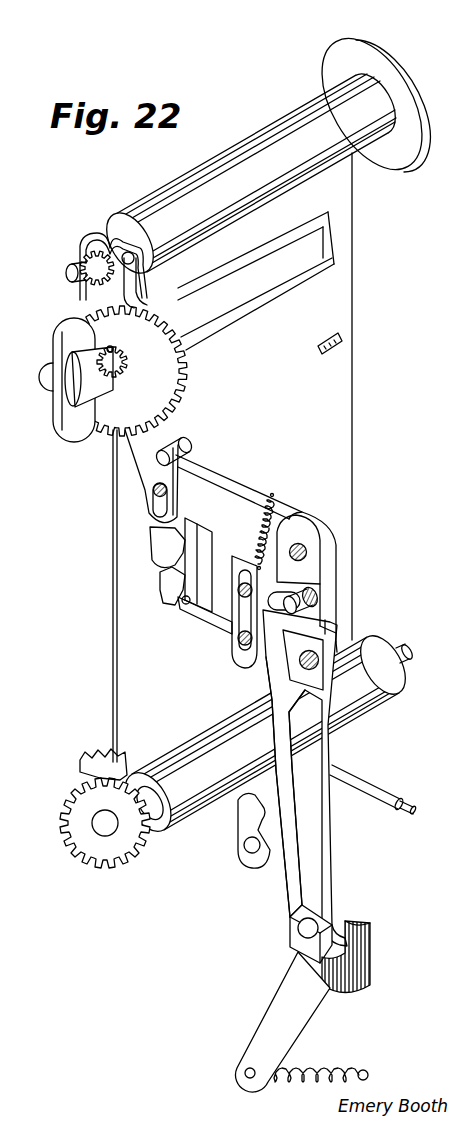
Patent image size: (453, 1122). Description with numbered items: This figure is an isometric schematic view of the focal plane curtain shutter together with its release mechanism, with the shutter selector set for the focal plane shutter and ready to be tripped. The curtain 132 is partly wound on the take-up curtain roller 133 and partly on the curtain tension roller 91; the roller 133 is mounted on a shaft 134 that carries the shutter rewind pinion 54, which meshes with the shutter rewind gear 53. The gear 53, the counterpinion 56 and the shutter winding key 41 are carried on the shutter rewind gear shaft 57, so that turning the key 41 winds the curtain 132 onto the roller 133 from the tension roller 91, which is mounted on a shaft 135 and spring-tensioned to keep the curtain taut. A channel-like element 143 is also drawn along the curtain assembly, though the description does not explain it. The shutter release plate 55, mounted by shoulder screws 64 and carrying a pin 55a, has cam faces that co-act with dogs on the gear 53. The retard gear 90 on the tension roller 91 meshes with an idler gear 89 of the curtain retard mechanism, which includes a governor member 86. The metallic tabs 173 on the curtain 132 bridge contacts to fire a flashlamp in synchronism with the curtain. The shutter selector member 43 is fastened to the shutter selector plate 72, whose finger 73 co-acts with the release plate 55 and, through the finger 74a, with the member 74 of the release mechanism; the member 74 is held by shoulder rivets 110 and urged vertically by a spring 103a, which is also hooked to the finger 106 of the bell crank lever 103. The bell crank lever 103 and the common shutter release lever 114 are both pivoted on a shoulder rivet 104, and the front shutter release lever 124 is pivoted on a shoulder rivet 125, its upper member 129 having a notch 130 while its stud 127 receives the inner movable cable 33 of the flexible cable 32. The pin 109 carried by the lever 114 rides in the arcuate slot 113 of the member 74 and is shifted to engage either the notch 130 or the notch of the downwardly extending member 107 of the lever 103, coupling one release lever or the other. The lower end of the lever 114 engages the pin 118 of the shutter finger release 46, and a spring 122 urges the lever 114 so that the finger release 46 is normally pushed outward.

The flexible cable 32 is at (357, 778).
The inner movable cable 33 is at (417, 799).
The shutter winding key 41 is at (95, 394).
The shutter selector member 43 is at (165, 583).
The shutter finger release 46 is at (371, 958).
The shutter rewind gear 53 is at (168, 370).
The shutter rewind pinion 54 is at (88, 246).
The shutter release plate 55 is at (140, 447).
The pin 55a is at (190, 448).
The counterpinion 56 is at (128, 378).
The shutter rewind gear shaft 57 is at (110, 346).
The shoulder screws 64 is at (140, 247).
The shutter selector plate 72 is at (212, 550).
The finger 73 is at (165, 545).
The member of the shutter release mechanism 74 is at (233, 640).
The finger 74a is at (197, 618).
The governor member 86 is at (441, 734).
The idler gear 89 is at (90, 752).
The retard gear 90 is at (118, 870).
The curtain tension roller 91 is at (197, 778).
The bell crank lever 103 is at (333, 529).
The spring 103a is at (292, 511).
The shoulder rivet 104 is at (308, 556).
The finger 106 is at (251, 491).
The downwardly extending member 107 is at (334, 580).
The pin 109 is at (318, 600).
The shoulder rivets 110 is at (185, 603).
The arcuate transversely extending slot 113 is at (283, 592).
The common shutter release lever 114 is at (333, 870).
The pin 118 is at (302, 932).
The spring 122 is at (332, 1062).
The front shutter release lever 124 is at (275, 752).
The shoulder rivet 125 is at (319, 667).
The stud 127 is at (248, 862).
The member 129 is at (338, 648).
The notch 130 is at (327, 634).
The curtain 132 is at (330, 462).
The take-up curtain roller 133 is at (270, 151).
The shaft 134 is at (70, 280).
The shaft 135 is at (428, 651).
The channel 143 is at (256, 281).
The metallic tabs 173 is at (343, 346).